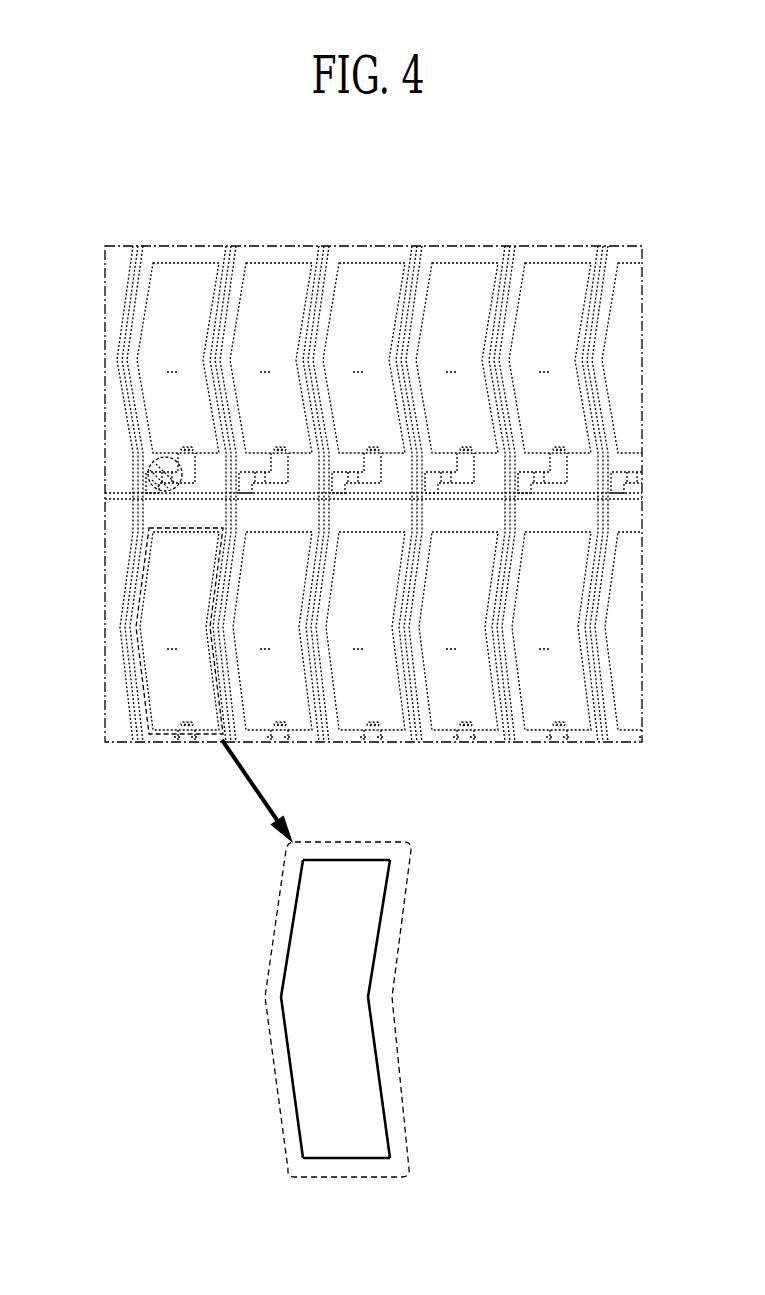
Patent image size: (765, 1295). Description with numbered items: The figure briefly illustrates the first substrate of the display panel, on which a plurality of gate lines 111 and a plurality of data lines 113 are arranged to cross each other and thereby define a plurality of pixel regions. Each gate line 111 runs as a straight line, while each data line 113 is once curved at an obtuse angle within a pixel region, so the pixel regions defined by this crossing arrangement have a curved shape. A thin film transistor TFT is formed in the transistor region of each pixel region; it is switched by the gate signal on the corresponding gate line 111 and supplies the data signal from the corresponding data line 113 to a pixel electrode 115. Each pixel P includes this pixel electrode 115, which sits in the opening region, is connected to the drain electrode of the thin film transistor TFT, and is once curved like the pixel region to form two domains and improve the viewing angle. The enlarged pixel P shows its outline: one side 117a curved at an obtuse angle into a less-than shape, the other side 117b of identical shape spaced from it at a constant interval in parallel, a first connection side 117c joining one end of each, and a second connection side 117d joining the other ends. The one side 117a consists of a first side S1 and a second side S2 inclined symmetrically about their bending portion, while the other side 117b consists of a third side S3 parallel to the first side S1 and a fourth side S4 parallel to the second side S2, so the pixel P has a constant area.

The gate line 111 is at (122, 502).
The data line 113 is at (128, 327).
The pixel electrode 115 is at (188, 262).
The thin film transistor TFT is at (142, 458).
The pixel P is at (335, 1011).
The one side 117a is at (469, 1009).
The other side 117b is at (201, 1009).
The first connection side 117c is at (358, 1160).
The second connection side 117d is at (357, 860).
The first side S1 is at (427, 1077).
The second side S2 is at (375, 952).
The third side S3 is at (240, 1077).
The fourth side S4 is at (288, 946).